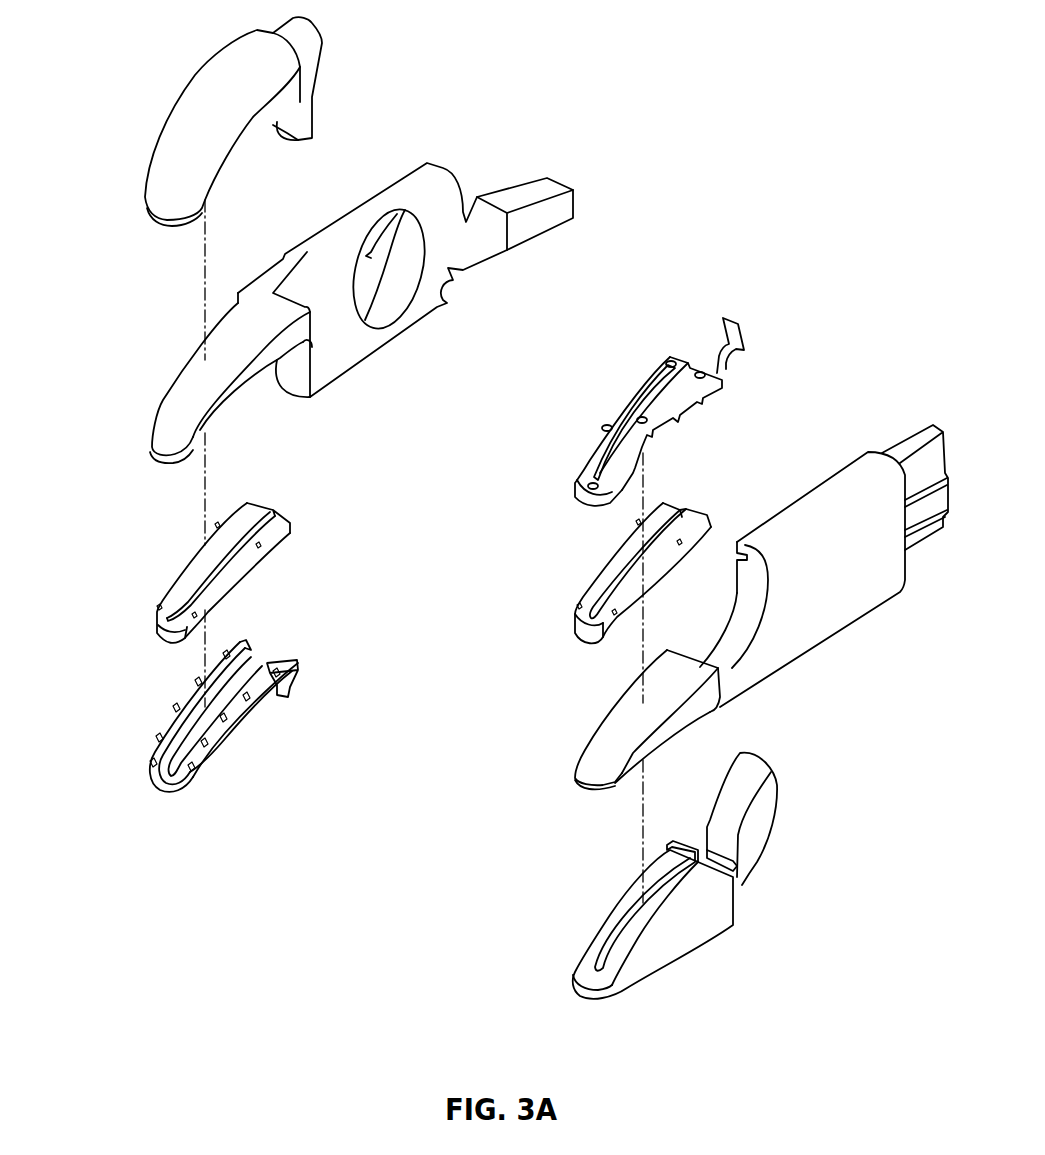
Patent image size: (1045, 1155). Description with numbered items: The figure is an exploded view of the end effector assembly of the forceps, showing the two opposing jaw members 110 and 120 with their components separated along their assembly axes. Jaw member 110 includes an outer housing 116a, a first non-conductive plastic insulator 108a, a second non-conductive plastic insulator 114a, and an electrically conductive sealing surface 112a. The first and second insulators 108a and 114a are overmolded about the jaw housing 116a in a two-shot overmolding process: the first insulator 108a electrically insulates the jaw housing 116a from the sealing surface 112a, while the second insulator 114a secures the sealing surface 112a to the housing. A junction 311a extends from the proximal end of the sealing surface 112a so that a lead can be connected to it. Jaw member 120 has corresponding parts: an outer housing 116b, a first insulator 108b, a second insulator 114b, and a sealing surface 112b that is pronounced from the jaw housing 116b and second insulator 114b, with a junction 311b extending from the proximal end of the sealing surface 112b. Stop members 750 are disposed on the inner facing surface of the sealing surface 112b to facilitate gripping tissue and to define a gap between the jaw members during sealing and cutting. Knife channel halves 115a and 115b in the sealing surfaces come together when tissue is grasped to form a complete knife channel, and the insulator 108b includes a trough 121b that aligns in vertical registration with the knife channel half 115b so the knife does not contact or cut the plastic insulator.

The jaw member 110 is at (123, 373).
The second insulator 114a is at (194, 103).
The outer housing 116a is at (340, 240).
The first insulator 108a is at (268, 560).
The sealing surface 112a is at (238, 711).
The knife channel 115a is at (183, 733).
The junction 311a is at (288, 690).
The jaw member 120 is at (847, 783).
The sealing surface 112b is at (690, 408).
The knife channel 115b is at (600, 470).
The stop member 750 is at (605, 420).
The junction 311b is at (741, 334).
The first insulator 108b is at (608, 552).
The trough 121b is at (600, 597).
The outer housing 116b is at (807, 510).
The second insulator 114b is at (617, 913).